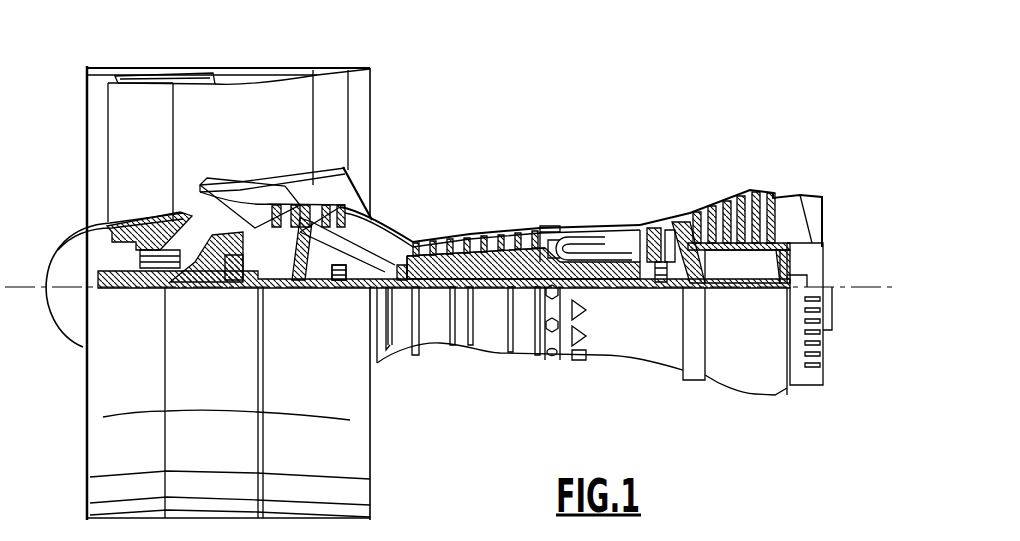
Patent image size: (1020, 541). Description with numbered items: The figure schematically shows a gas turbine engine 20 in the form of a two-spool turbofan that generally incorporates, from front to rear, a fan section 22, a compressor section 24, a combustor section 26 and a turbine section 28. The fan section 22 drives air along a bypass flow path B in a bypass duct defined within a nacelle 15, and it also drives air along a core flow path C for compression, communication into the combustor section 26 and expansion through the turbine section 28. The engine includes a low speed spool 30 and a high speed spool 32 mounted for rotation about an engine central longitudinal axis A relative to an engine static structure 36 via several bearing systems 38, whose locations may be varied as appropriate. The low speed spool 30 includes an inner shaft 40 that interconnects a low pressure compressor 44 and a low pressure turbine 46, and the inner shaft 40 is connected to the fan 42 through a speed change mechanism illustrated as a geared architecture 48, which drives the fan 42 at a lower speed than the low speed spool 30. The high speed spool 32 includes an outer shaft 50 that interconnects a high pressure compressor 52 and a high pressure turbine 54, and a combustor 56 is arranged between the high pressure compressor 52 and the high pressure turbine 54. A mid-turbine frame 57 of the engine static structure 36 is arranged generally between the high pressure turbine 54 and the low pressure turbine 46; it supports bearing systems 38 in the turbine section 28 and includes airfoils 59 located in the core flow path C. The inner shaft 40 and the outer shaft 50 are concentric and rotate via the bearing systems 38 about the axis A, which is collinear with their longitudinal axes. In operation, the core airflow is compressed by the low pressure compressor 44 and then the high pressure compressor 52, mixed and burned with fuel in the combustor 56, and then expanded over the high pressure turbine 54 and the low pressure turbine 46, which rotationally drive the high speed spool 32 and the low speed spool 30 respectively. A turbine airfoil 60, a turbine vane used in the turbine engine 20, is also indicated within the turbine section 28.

The gas turbine engine 20 is at (590, 104).
The fan section 22 is at (172, 60).
The nacelle 15 is at (228, 70).
The fan 42 is at (157, 168).
The low pressure compressor 44 is at (298, 203).
The compressor section 24 is at (408, 212).
The high pressure compressor 52 is at (476, 243).
The high speed spool 32 is at (528, 240).
The combustor section 26 is at (584, 205).
The combustor 56 is at (582, 247).
The high pressure turbine 54 is at (633, 228).
The mid-turbine frame 57 is at (673, 216).
The turbine airfoil 60 is at (686, 240).
The turbine section 28 is at (706, 174).
The low pressure turbine 46 is at (733, 195).
The airfoils 59 is at (682, 255).
The bearing systems 38 is at (338, 286).
The geared architecture 48 is at (233, 283).
The low speed spool 30 is at (493, 293).
The engine static structure 36 is at (525, 360).
The inner shaft 40 is at (389, 345).
The outer shaft 50 is at (591, 290).
The engine central longitudinal axis A is at (897, 287).
The bypass flow path B is at (205, 127).
The core flow path C is at (232, 208).